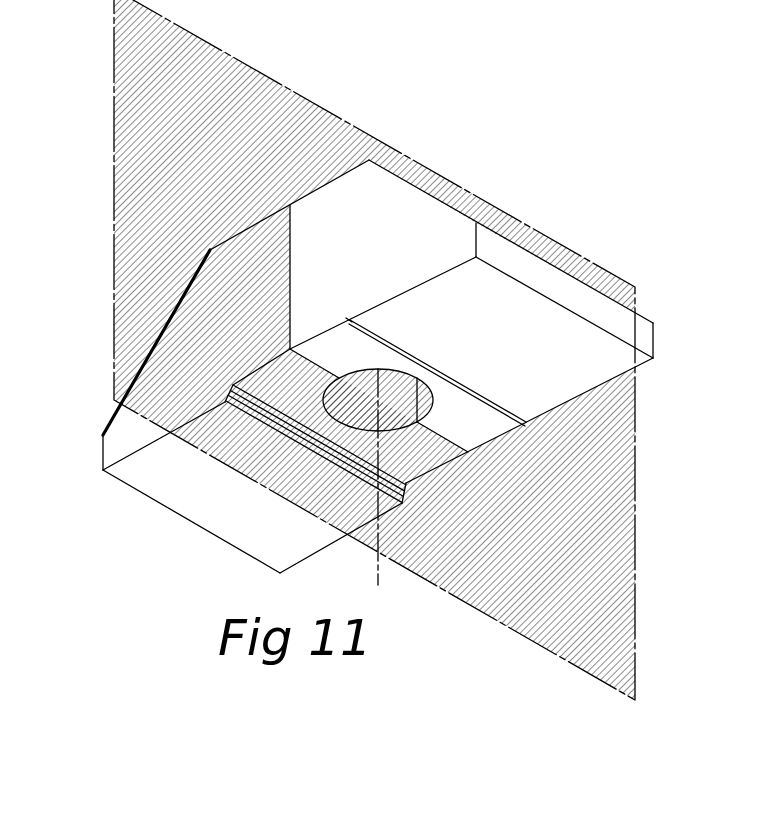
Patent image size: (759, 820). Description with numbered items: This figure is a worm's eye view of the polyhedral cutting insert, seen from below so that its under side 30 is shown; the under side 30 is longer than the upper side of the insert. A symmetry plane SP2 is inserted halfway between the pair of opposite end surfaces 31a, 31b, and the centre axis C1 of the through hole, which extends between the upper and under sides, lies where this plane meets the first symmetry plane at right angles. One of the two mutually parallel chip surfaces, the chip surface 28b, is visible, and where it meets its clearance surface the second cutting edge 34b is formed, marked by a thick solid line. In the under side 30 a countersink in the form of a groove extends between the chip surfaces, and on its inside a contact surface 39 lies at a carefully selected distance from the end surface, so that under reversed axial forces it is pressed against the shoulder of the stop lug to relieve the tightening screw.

The end surface 31a is at (102, 458).
The end surface 31b is at (587, 305).
The symmetry plane SP2 is at (253, 87).
The chip surface 28b is at (384, 256).
The under side 30 is at (513, 349).
The second cutting edge 34b is at (116, 410).
The contact surface 39 is at (475, 409).
The centre axis C1 is at (378, 572).